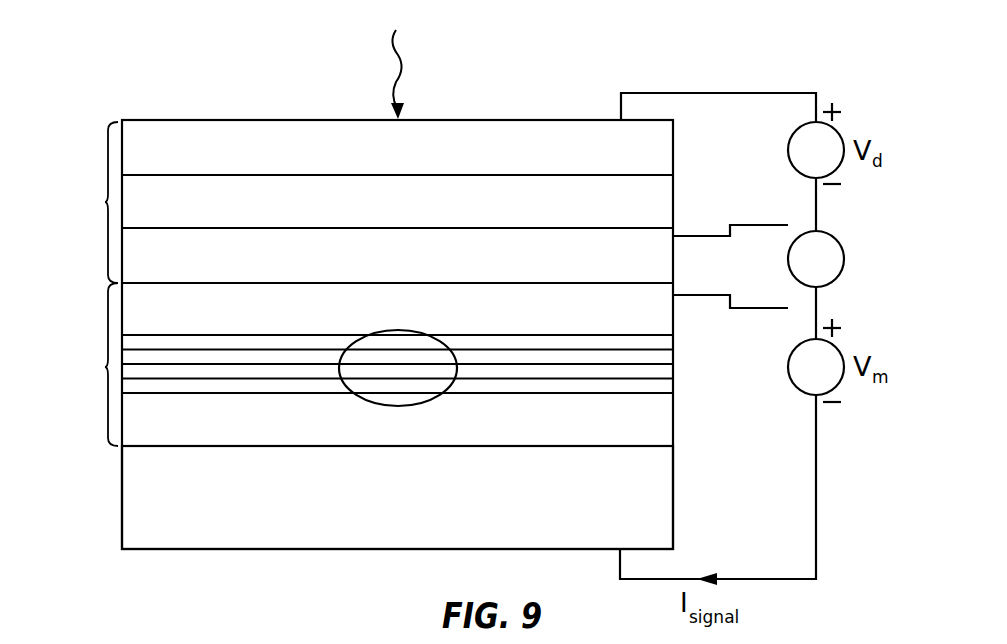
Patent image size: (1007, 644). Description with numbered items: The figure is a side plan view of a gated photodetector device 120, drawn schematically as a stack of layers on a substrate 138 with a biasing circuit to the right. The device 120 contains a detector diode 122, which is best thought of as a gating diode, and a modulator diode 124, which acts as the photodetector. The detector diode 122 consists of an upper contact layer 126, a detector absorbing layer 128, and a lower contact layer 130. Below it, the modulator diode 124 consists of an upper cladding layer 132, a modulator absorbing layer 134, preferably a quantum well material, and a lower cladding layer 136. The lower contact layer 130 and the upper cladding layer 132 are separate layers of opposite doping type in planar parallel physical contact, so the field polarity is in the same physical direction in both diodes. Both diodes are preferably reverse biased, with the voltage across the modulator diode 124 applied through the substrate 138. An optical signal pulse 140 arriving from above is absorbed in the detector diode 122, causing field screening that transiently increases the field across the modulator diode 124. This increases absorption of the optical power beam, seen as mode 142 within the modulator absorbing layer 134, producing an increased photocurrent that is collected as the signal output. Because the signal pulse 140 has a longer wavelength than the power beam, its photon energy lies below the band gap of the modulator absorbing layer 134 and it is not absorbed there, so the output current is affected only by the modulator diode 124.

The device 120 is at (148, 90).
The detector diode 122 is at (88, 202).
The modulator diode 124 is at (88, 364).
The upper contact layer 126 is at (397, 154).
The detector absorbing layer 128 is at (397, 207).
The lower contact layer 130 is at (397, 260).
The upper cladding layer 132 is at (397, 313).
The modulator absorbing layer 134 is at (660, 366).
The lower cladding layer 136 is at (397, 421).
The substrate 138 is at (397, 497).
The signal pulse 140 is at (398, 60).
The mode 142 is at (345, 393).